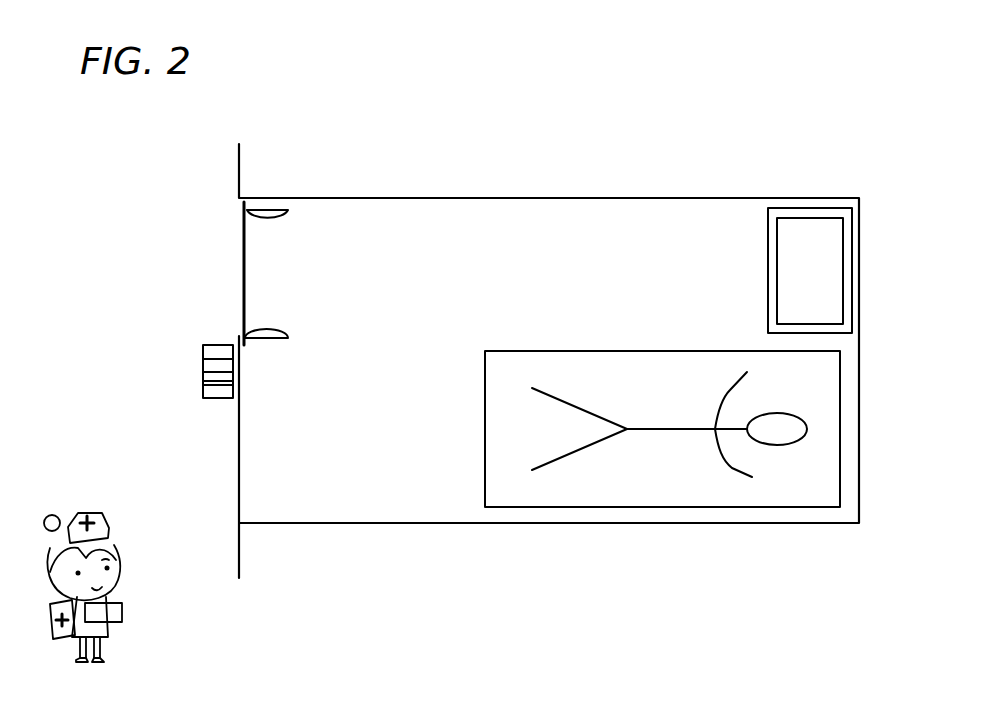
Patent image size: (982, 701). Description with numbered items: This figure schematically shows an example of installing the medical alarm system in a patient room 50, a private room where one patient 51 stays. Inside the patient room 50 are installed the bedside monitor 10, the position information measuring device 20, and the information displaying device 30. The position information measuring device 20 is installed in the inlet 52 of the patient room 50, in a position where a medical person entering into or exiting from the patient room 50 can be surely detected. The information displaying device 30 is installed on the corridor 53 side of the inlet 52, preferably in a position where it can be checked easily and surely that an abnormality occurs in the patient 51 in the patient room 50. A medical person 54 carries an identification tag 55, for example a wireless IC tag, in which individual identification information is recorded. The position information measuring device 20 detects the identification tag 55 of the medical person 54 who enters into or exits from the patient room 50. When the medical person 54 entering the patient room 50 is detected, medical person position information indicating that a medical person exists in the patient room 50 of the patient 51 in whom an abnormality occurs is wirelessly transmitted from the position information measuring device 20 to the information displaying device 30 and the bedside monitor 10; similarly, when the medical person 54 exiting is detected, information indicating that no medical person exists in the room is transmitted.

The bedside monitor 10 is at (804, 208).
The position information measuring device 20 is at (270, 330).
The information displaying device 30 is at (203, 367).
The patient room 50 is at (520, 190).
The patient 51 is at (662, 428).
The inlet 52 is at (235, 262).
The corridor 53 is at (130, 194).
The medical person 54 is at (117, 542).
The identification tag 55 is at (122, 610).